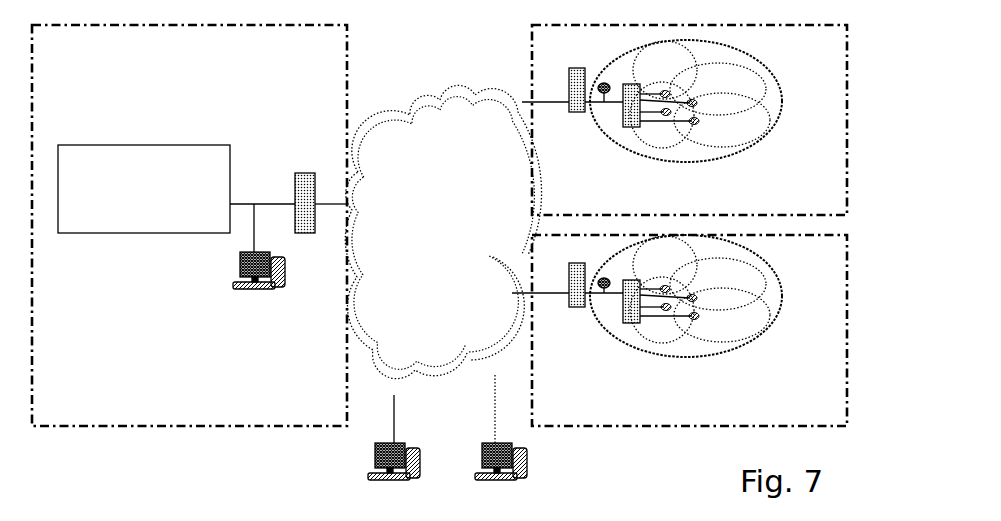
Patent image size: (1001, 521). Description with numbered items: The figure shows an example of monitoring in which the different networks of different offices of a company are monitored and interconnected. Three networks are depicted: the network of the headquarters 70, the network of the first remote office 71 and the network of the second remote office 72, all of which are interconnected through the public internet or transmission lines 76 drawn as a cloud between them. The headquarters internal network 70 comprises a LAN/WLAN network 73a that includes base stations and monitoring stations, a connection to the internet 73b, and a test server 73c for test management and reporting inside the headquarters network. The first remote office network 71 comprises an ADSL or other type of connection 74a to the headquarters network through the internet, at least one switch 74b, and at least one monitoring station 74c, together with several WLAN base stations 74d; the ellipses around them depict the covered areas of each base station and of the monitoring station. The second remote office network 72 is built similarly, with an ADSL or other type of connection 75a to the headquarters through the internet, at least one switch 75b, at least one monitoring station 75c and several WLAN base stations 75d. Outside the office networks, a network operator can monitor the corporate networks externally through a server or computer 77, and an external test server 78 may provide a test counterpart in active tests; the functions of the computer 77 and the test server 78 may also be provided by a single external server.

The network of the headquarters 70 is at (348, 63).
The network of the first remote office 71 is at (532, 55).
The network of the second remote office 72 is at (689, 427).
The LAN/WLAN network 73a is at (165, 145).
The connection to the internet 73b is at (310, 173).
The test server 73c is at (238, 285).
The ADSL or other type of connection 74a is at (580, 68).
The switch 74b is at (621, 130).
The monitoring station 74c is at (606, 82).
The remote office 1 access points 74d is at (668, 93).
The ADSL or other type of connection 75a is at (576, 306).
The switch 75b is at (621, 325).
The monitoring station 75c is at (606, 278).
The remote office 2 access points 75d is at (668, 290).
The public internet or transmission lines 76 is at (462, 77).
The server or computer 77 is at (368, 479).
The external test server 78 is at (528, 470).